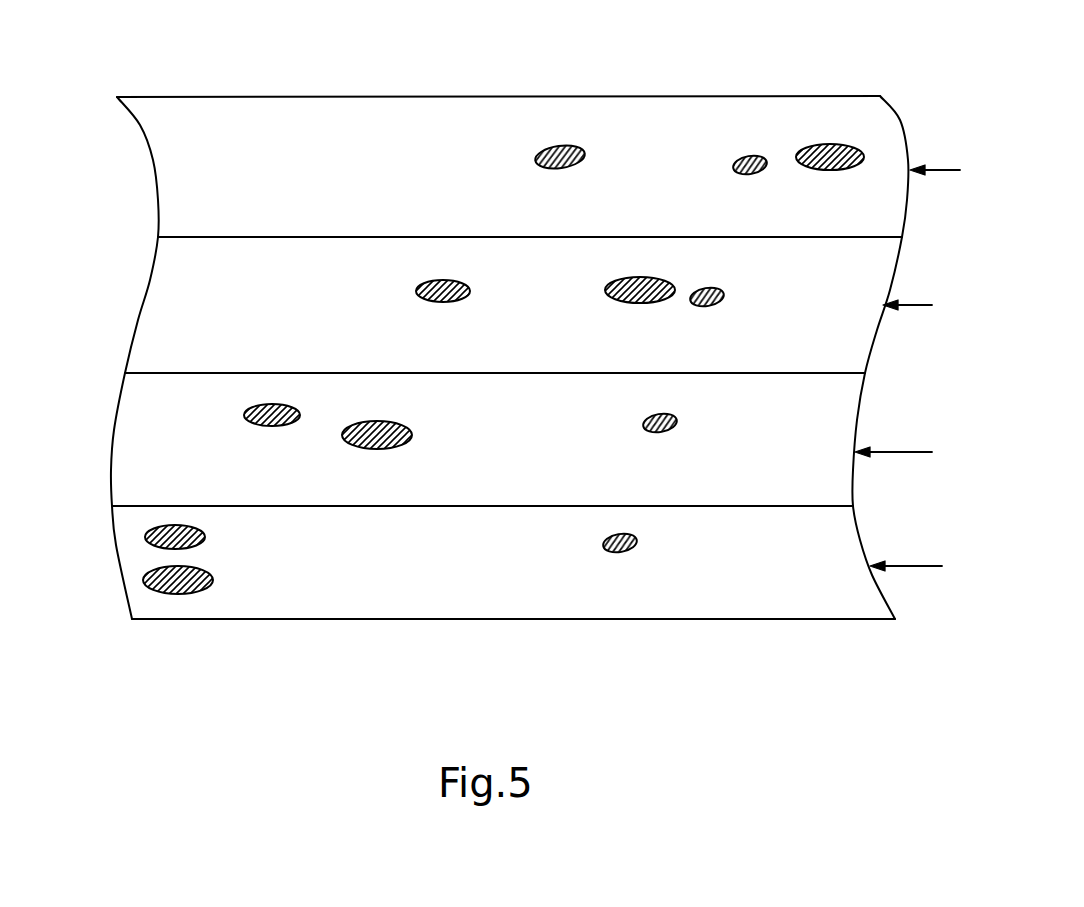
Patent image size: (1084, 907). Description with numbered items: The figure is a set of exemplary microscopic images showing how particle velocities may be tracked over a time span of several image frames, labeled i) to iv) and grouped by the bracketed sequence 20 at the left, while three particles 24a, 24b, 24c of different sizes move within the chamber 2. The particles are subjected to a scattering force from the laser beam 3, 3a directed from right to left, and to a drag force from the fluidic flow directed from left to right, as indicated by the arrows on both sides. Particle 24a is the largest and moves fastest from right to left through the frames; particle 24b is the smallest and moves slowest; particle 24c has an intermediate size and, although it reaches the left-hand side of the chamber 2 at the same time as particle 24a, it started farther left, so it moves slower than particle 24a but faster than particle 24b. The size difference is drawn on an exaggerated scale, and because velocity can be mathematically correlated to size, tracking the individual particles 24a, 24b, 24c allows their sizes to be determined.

The chamber 2 is at (527, 96).
The layers 20 is at (141, 170).
The laser beam 3 is at (947, 170).
The first surface 3a is at (925, 566).
The particle 24a is at (817, 142).
The particle 24b is at (746, 174).
The particle 24c is at (548, 166).